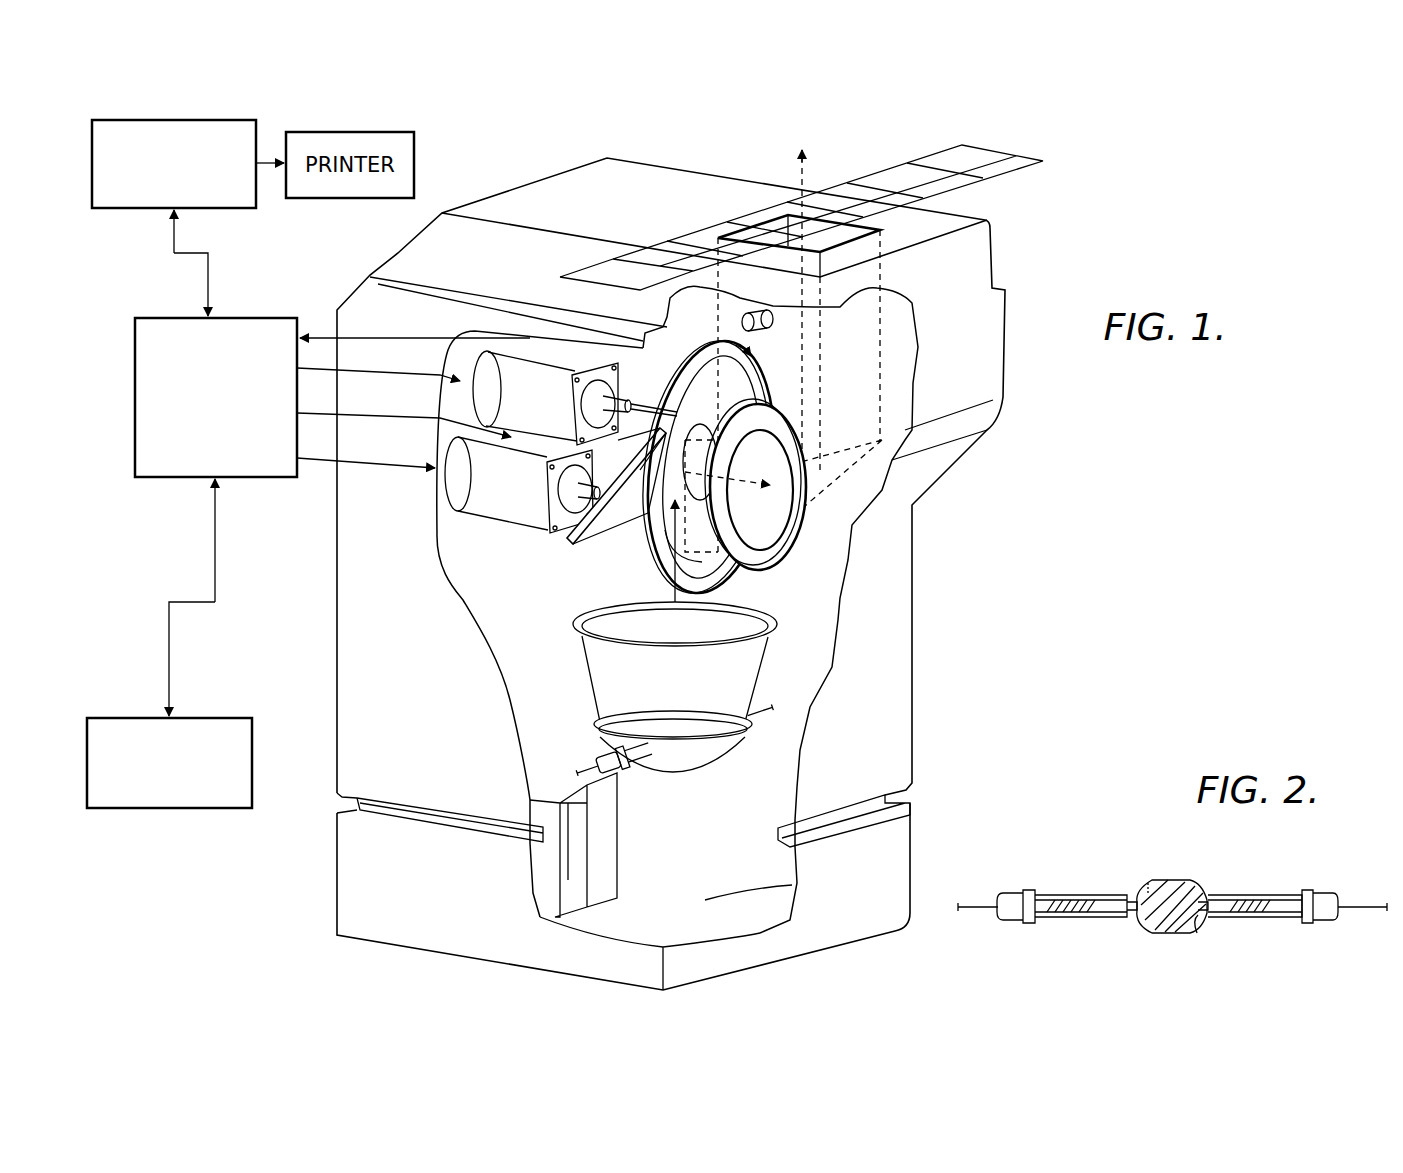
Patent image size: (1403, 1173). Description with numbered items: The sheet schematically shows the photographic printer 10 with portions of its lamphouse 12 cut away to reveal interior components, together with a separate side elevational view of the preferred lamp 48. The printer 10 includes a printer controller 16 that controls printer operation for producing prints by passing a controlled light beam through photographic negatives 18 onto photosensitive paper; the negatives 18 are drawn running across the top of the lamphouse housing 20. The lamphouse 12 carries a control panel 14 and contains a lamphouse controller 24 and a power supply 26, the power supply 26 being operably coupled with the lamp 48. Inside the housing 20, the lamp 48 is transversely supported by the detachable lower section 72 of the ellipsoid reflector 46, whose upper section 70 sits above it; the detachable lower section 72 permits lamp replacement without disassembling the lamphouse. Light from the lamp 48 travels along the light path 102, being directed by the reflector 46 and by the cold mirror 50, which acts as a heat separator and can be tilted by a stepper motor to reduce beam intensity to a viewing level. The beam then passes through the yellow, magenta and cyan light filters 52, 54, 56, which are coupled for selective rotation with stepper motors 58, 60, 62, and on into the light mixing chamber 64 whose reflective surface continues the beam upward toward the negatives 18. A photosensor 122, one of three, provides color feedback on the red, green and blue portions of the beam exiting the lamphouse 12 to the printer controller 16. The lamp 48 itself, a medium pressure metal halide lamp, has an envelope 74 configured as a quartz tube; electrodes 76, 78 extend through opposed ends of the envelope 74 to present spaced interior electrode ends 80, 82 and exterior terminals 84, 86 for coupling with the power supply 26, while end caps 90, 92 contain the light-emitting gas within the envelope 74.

In FIG. 1, the photographic printer 10 is at (753, 574).
In FIG. 1, the lamphouse 12 is at (927, 638).
In FIG. 1, the control panel 14 is at (208, 718).
In FIG. 1, the printer controller 16 is at (143, 209).
In FIG. 1, the photographic negatives 18 is at (877, 176).
In FIG. 1, the housing 20 is at (671, 574).
In FIG. 1, the lamphouse controller 24 is at (183, 463).
In FIG. 1, the power supply 26 is at (613, 882).
In FIG. 1, the ellipsoid reflector 46 is at (678, 723).
In FIG. 1, the lamp 48 is at (634, 770).
In FIG. 2, the lamp 48 is at (1156, 899).
In FIG. 1, the mirror 50 is at (605, 523).
In FIG. 1, the yellow light filter 52 is at (735, 467).
In FIG. 1, the magenta light filter 54 is at (660, 545).
In FIG. 1, the cyan light filter 56 is at (800, 510).
In FIG. 1, the stepper motor 58 is at (480, 400).
In FIG. 1, the stepper motor 60 is at (500, 505).
In FIG. 1, the stepper motor 62 is at (555, 445).
In FIG. 1, the light mixing chamber 64 is at (915, 383).
In FIG. 1, the upper section 70 is at (760, 692).
In FIG. 1, the detachable lower section 72 is at (713, 750).
In FIG. 2, the envelope 74 is at (1163, 880).
In FIG. 2, the electrode 76 is at (1095, 907).
In FIG. 2, the electrode 78 is at (1268, 910).
In FIG. 2, the interior electrode end 80 is at (1140, 893).
In FIG. 2, the interior electrode end 82 is at (1197, 915).
In FIG. 1, the exterior terminal 84 is at (597, 767).
In FIG. 2, the exterior terminal 84 is at (972, 909).
In FIG. 1, the exterior terminal 86 is at (775, 710).
In FIG. 2, the exterior terminal 86 is at (1378, 915).
In FIG. 1, the end cap 90 is at (608, 777).
In FIG. 2, the end cap 90 is at (1013, 895).
In FIG. 2, the end cap 92 is at (1320, 895).
In FIG. 1, the light path 102 is at (675, 618).
In FIG. 1, the photosensor 122 is at (775, 327).